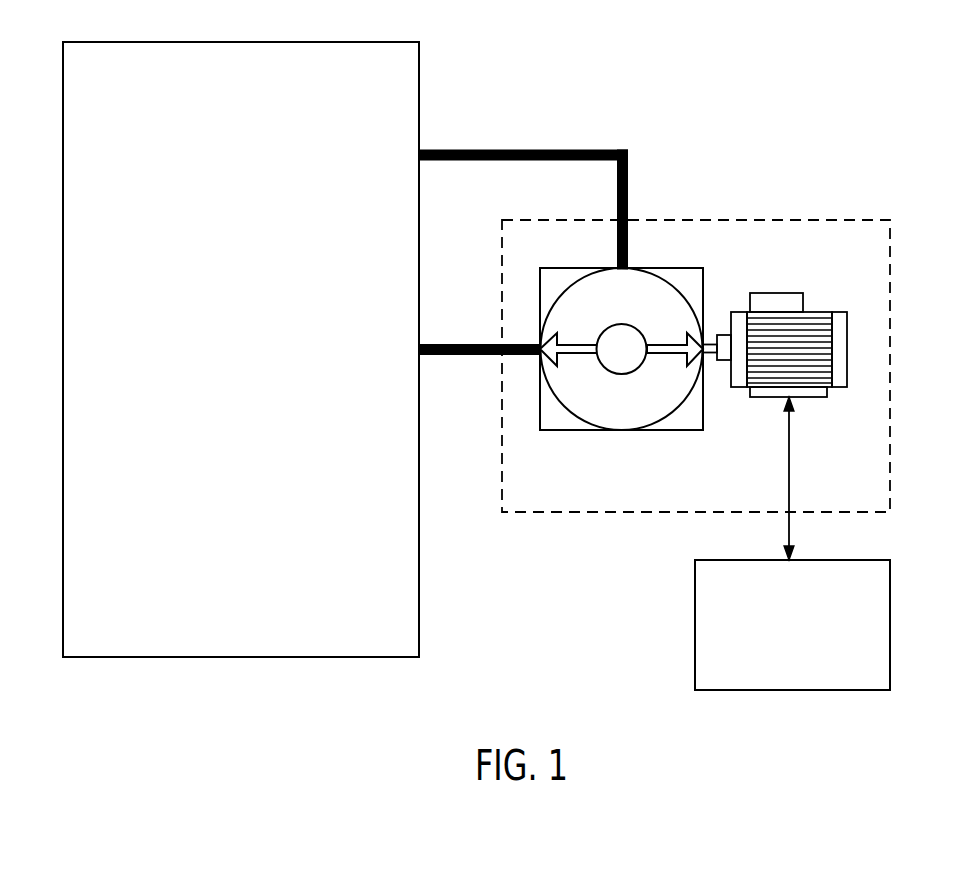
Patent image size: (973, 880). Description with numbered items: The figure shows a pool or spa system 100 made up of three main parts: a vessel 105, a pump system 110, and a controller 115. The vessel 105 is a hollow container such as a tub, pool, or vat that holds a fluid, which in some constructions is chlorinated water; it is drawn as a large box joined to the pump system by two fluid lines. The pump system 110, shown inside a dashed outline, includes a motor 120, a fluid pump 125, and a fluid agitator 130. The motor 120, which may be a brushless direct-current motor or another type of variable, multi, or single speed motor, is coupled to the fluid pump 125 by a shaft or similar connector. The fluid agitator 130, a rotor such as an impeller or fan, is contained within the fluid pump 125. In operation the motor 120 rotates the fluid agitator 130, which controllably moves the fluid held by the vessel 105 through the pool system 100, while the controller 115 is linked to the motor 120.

The pool or spa system 100 is at (925, 134).
The vessel 105 is at (258, 464).
The pump system 110 is at (890, 288).
The controller 115 is at (807, 666).
The motor 120 is at (768, 293).
The fluid pump 125 is at (548, 432).
The fluid agitator 130 is at (662, 356).